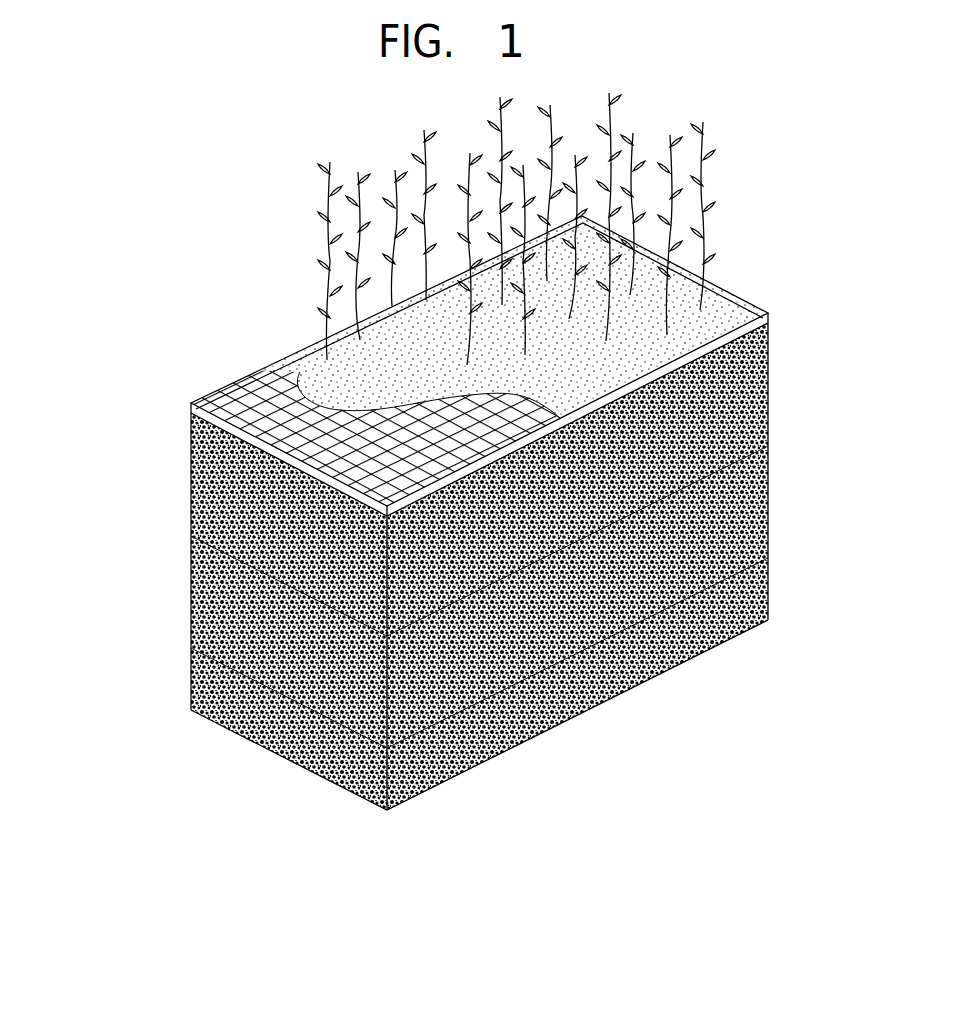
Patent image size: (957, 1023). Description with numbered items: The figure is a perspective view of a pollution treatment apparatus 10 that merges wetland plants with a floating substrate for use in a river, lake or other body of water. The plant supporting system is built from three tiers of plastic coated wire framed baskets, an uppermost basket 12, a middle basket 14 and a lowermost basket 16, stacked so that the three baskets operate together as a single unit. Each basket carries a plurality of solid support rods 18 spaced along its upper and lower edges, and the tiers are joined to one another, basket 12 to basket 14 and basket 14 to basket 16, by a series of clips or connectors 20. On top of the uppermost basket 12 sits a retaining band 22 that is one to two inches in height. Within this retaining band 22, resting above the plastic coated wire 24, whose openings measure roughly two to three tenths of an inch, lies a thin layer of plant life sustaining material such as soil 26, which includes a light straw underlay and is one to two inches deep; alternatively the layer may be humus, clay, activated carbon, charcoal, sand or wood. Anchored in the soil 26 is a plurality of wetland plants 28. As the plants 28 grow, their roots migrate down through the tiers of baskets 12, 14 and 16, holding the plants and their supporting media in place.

The apparatus 10 is at (439, 466).
The uppermost basket 12 is at (770, 385).
The middle basket 14 is at (770, 492).
The lowermost basket 16 is at (770, 577).
The solid support rods 18 is at (769, 330).
The clips or connectors 20 is at (770, 450).
The retaining band 22 is at (222, 394).
The plastic coated wire 24 is at (255, 385).
The soil 26 is at (736, 310).
The wetland plants 28 is at (322, 209).